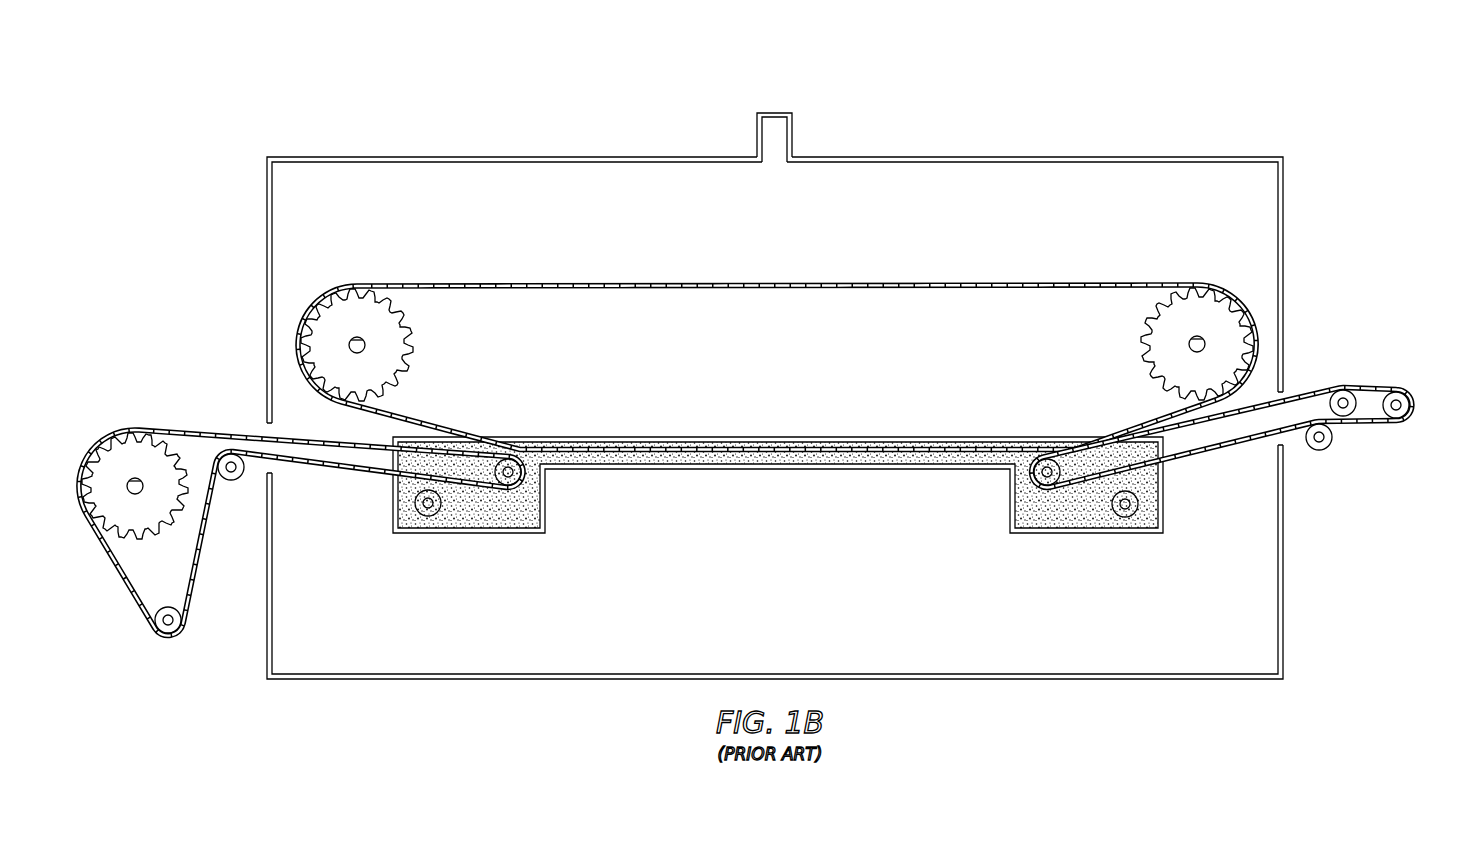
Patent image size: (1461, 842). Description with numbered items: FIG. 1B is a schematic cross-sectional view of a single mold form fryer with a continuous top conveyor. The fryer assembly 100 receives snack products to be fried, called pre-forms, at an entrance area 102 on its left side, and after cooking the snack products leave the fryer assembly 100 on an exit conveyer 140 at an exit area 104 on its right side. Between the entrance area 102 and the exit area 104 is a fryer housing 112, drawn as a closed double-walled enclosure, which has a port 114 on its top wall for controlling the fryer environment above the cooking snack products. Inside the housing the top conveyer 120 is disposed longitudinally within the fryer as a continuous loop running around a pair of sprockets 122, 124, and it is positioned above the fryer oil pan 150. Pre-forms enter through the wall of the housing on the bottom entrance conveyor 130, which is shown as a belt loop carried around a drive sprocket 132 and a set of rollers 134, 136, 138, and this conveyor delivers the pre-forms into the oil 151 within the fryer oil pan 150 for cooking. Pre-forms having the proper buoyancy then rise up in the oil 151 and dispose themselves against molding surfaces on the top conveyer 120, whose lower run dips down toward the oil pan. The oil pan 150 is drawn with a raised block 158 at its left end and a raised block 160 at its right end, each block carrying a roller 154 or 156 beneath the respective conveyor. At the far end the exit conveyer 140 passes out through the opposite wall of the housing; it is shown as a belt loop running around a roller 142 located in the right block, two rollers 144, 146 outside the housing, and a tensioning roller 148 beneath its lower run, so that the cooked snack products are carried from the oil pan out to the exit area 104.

The fryer assembly 100 is at (740, 370).
The entrance area 102 is at (301, 465).
The exit area 104 is at (1232, 357).
The fryer housing 112 is at (268, 209).
The port 114 is at (775, 112).
The top conveyer 120 is at (1045, 284).
The left sprocket 122 is at (410, 343).
The right sprocket 124 is at (1142, 346).
The bottom entrance conveyor 130 is at (205, 430).
The input drive sprocket 132 is at (145, 541).
The input belt roller 134 is at (540, 477).
The input idler roller 136 is at (231, 483).
The input lower roller 138 is at (160, 636).
The exit conveyer 140 is at (1363, 385).
The output belt roller 142 is at (1022, 481).
The output roller 144 is at (1336, 388).
The output end roller 146 is at (1400, 390).
The output tension roller 148 is at (1334, 445).
The fryer oil pan 150 is at (778, 512).
The oil 151 is at (700, 463).
The left platform roller 154 is at (405, 505).
The right platform roller 156 is at (1145, 505).
The left platform block 158 is at (465, 539).
The right platform block 160 is at (1100, 530).